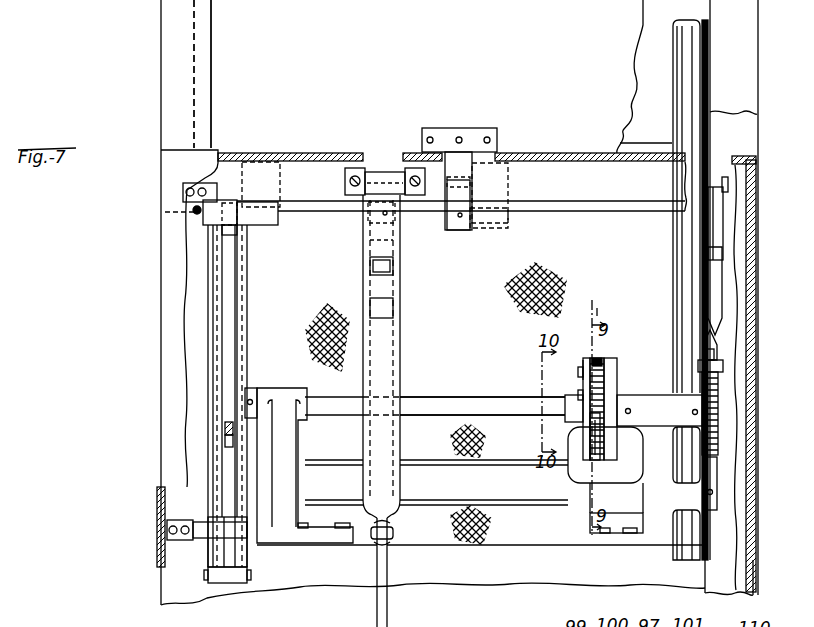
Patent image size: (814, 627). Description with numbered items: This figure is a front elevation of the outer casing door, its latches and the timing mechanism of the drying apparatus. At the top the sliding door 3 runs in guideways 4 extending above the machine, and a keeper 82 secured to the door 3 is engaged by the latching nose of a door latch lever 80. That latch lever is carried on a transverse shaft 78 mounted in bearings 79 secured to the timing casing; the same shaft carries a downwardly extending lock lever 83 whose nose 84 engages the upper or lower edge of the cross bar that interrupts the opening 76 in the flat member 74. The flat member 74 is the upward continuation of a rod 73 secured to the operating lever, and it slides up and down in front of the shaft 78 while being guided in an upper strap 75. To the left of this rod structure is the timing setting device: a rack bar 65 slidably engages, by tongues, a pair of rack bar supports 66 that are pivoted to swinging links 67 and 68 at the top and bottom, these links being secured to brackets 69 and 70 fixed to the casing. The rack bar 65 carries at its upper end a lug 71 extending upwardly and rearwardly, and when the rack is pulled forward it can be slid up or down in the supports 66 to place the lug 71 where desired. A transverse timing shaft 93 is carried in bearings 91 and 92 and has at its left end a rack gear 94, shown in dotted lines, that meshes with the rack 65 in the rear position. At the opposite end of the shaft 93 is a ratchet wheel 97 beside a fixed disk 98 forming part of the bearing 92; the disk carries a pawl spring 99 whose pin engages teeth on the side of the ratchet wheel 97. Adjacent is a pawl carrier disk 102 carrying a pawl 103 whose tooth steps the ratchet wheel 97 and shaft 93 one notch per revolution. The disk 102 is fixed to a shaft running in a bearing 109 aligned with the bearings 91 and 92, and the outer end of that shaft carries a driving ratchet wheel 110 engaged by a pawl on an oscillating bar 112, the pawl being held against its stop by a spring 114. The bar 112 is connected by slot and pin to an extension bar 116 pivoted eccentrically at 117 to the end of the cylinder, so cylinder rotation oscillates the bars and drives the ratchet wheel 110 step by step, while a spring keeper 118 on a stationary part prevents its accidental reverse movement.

The sliding door 3 is at (319, 74).
The guideways 4 is at (203, 36).
The rack bar 65 is at (228, 485).
The rack bar supports 66 is at (218, 298).
The swinging link 67 is at (200, 222).
The swinging link 68 is at (215, 571).
The bracket 69 is at (183, 193).
The bracket 70 is at (170, 532).
The lug 71 is at (228, 352).
The rod 73 is at (388, 611).
The flat member 74 is at (390, 380).
The upper strap 75 is at (378, 172).
The opening 76 is at (390, 308).
The transverse shaft 78 is at (326, 214).
The bearings 79 is at (268, 224).
The door latch lever 80 is at (462, 197).
The keeper 82 is at (473, 136).
The lock lever 83 is at (375, 248).
The nose 84 is at (385, 266).
The bearing 91 is at (283, 392).
The bearing 92 is at (578, 392).
The timing shaft 93 is at (490, 382).
The rack gear 94 is at (230, 440).
The ratchet wheel 97 is at (601, 358).
The disk 98 is at (603, 301).
The pawl spring 99 is at (589, 360).
The pawl carrier disk 102 is at (614, 376).
The pawl 103 is at (595, 432).
The bearing 109 is at (660, 410).
The driving ratchet wheel 110 is at (703, 432).
The oscillating bar 112 is at (720, 290).
The spring 114 is at (712, 357).
The extension bar 116 is at (712, 208).
The eccentric pivot 117 is at (727, 185).
The spring keeper 118 is at (705, 482).